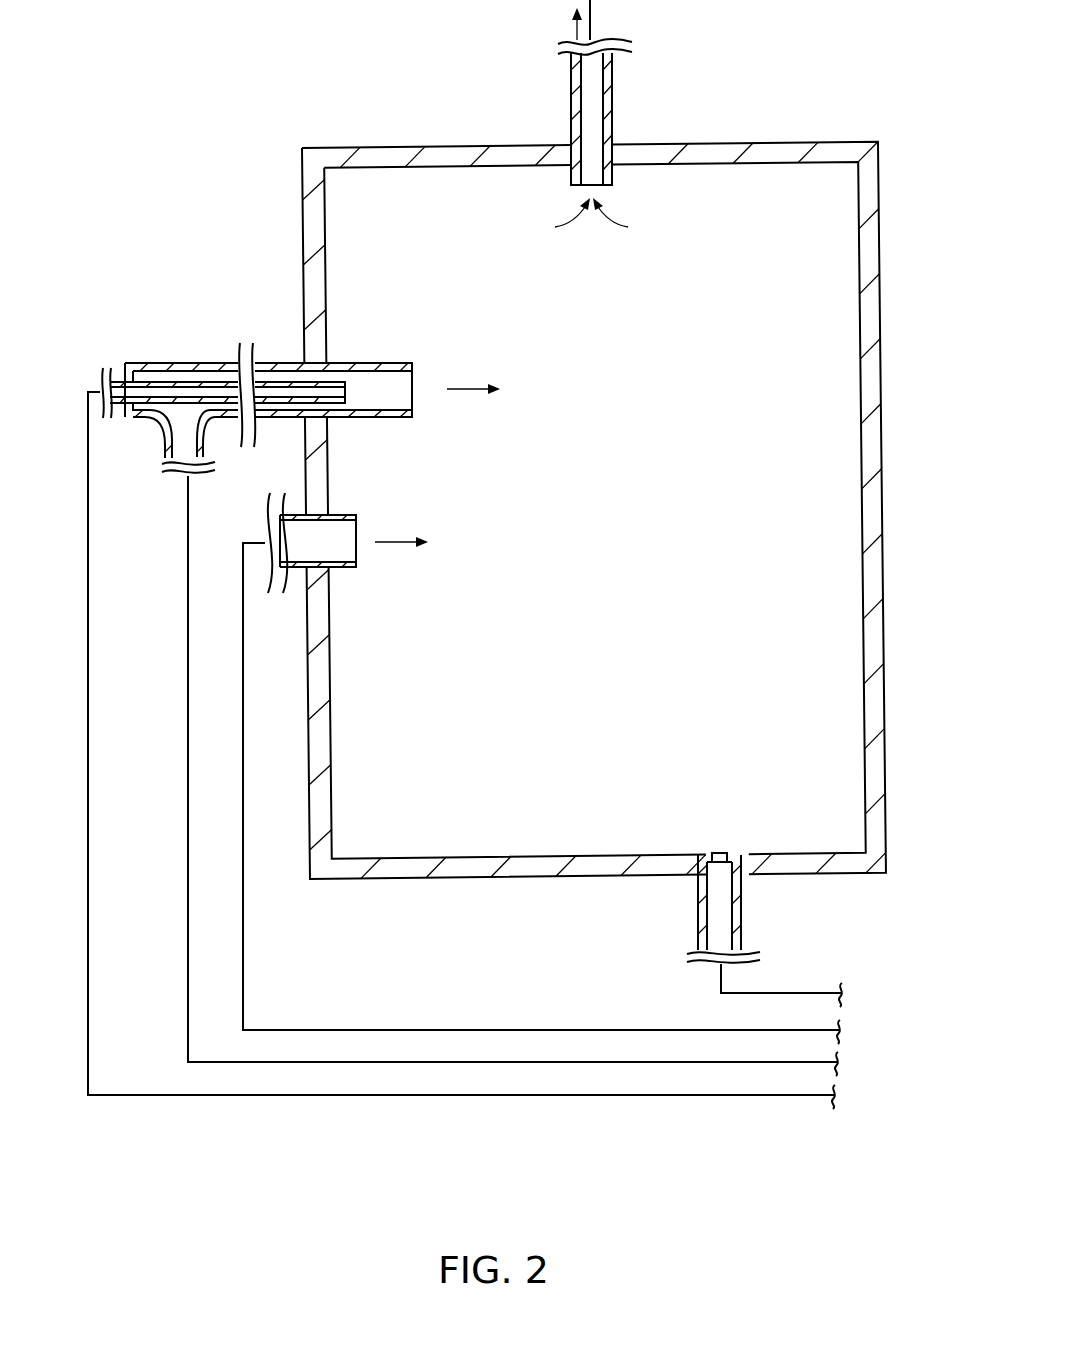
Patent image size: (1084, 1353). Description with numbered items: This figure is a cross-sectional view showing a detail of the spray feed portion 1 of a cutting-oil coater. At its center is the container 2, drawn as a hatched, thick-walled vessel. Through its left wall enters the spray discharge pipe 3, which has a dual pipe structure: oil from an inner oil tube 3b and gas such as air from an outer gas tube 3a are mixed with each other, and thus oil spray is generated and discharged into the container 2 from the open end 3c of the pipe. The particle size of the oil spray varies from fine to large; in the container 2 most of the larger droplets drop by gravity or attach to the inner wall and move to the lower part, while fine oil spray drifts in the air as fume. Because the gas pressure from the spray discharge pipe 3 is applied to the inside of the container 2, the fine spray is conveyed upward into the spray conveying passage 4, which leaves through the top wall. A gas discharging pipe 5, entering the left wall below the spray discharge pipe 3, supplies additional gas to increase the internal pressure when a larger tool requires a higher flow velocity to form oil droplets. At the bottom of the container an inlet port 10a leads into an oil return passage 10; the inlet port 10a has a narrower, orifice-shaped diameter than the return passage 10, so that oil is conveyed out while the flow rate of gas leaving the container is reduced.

The spray feed portion 1 is at (890, 116).
The container 2 is at (870, 318).
The spray discharge pipe 3 is at (153, 347).
The gas tube 3a is at (288, 361).
The oil tube 3b is at (337, 380).
The outlet of outer pipe 3c is at (414, 381).
The spray conveying passage 4 is at (612, 92).
The gas discharging pipe 5 is at (346, 513).
The oil return passage 10 is at (738, 925).
The inlet port 10a is at (717, 853).